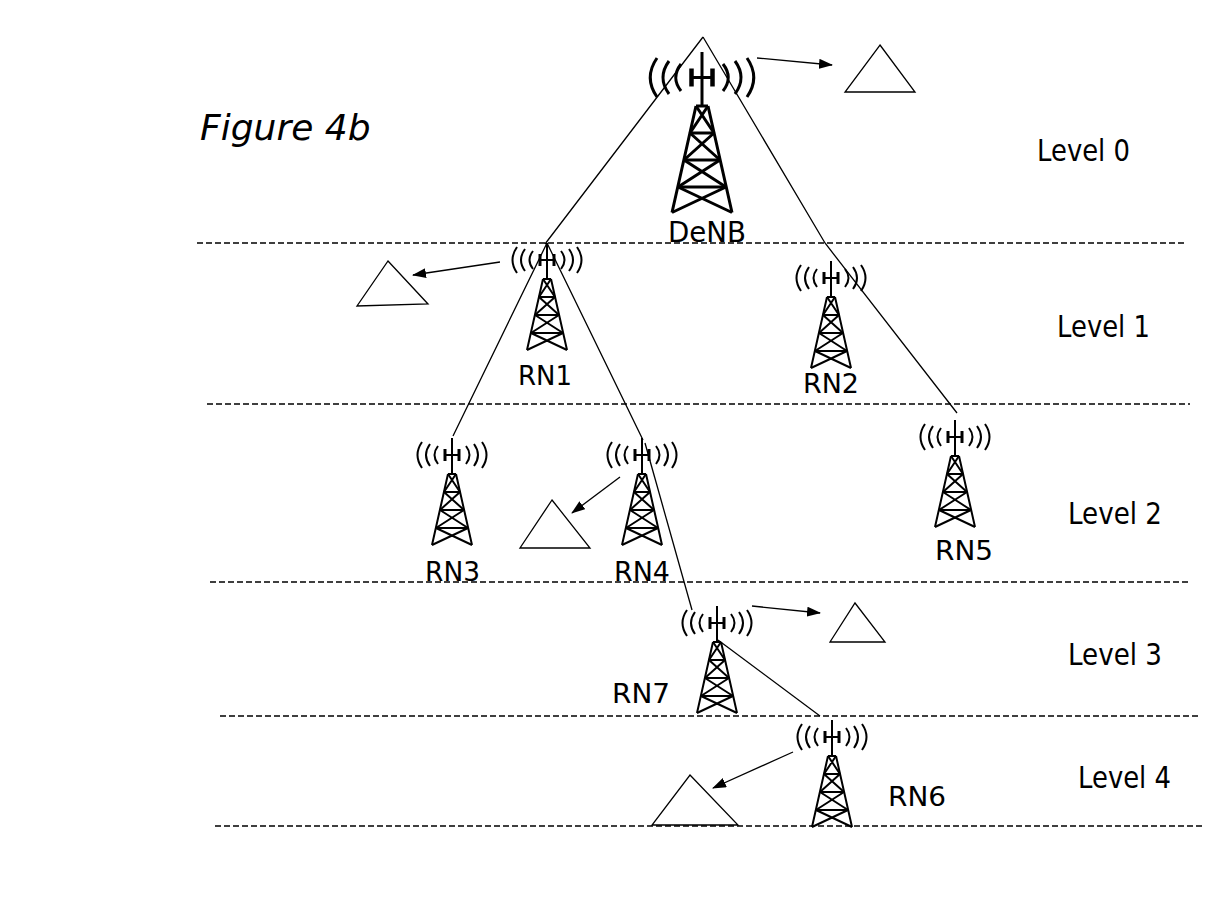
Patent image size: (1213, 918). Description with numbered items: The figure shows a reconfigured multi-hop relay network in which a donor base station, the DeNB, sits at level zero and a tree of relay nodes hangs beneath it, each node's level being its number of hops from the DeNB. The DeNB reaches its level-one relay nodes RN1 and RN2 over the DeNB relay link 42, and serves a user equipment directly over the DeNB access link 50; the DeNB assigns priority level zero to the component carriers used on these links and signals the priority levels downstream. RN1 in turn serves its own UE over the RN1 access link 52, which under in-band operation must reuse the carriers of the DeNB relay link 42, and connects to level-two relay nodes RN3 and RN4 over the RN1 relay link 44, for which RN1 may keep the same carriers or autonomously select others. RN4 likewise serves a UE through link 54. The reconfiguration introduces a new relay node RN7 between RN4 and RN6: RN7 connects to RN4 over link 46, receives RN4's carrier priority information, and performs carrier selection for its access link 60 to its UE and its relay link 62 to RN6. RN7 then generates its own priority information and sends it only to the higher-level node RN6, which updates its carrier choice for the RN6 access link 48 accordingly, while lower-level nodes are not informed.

The DeNB relay link 42 is at (614, 153).
The RN1 relay link 44 is at (487, 362).
The RN6 access link 46 is at (676, 547).
The RN6 access link 48 is at (757, 766).
The DeNB access link 50 is at (836, 58).
The RN1 access link 52 is at (466, 271).
The access link from RN4 to UE 54 is at (597, 490).
The RN7 access links 60 is at (770, 597).
The RN7 relay links 62 is at (782, 686).